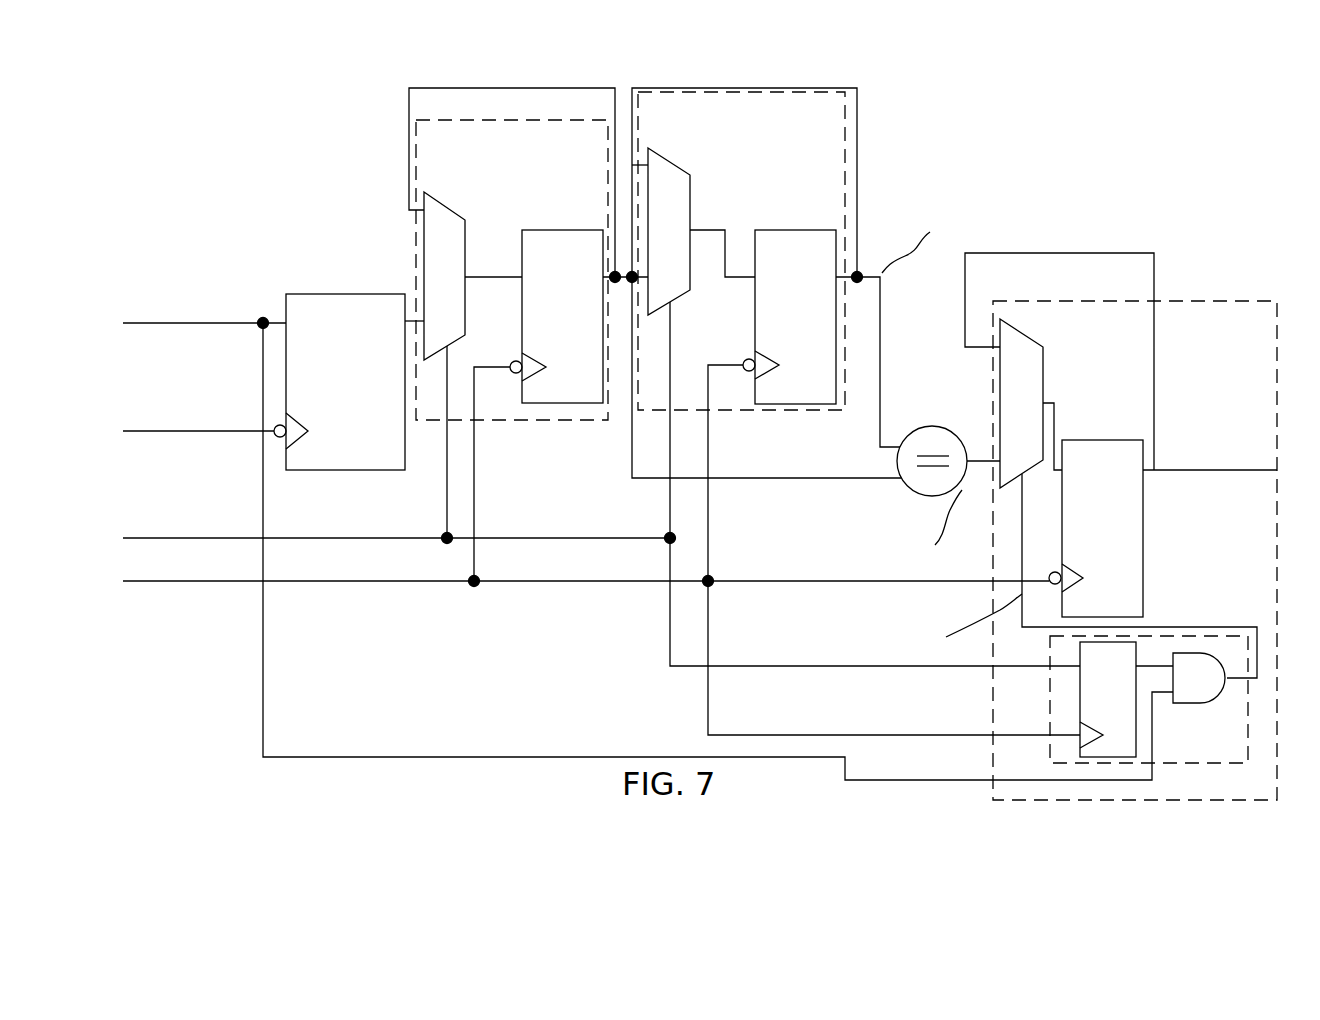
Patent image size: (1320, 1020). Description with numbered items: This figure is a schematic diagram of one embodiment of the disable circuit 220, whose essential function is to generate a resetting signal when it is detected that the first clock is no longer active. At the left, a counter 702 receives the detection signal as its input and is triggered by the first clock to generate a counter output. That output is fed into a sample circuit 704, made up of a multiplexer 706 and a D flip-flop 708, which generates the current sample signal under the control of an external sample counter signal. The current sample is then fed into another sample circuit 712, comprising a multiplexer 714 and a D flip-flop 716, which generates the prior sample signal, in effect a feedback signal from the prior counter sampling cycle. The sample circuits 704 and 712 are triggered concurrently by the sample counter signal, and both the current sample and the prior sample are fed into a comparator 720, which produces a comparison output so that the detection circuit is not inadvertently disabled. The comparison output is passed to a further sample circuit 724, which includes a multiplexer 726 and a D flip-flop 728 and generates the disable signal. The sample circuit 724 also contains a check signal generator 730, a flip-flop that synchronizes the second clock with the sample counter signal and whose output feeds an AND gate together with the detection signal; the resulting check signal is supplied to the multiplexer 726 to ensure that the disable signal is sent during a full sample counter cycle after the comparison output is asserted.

The disable circuit 220 is at (288, 150).
The counter 702 is at (318, 294).
The sample circuit 704 is at (455, 120).
The multiplexer 706 is at (448, 205).
The D flip-flop 708 is at (536, 230).
The sample circuit 712 is at (846, 90).
The multiplexer 714 is at (668, 162).
The D flip-flop 716 is at (774, 230).
The comparator 720 is at (920, 426).
The sample circuit 724 is at (1206, 301).
The multiplexer 726 is at (1022, 332).
The D flip-flop 728 is at (1070, 440).
The check signal generator 730 is at (1163, 636).